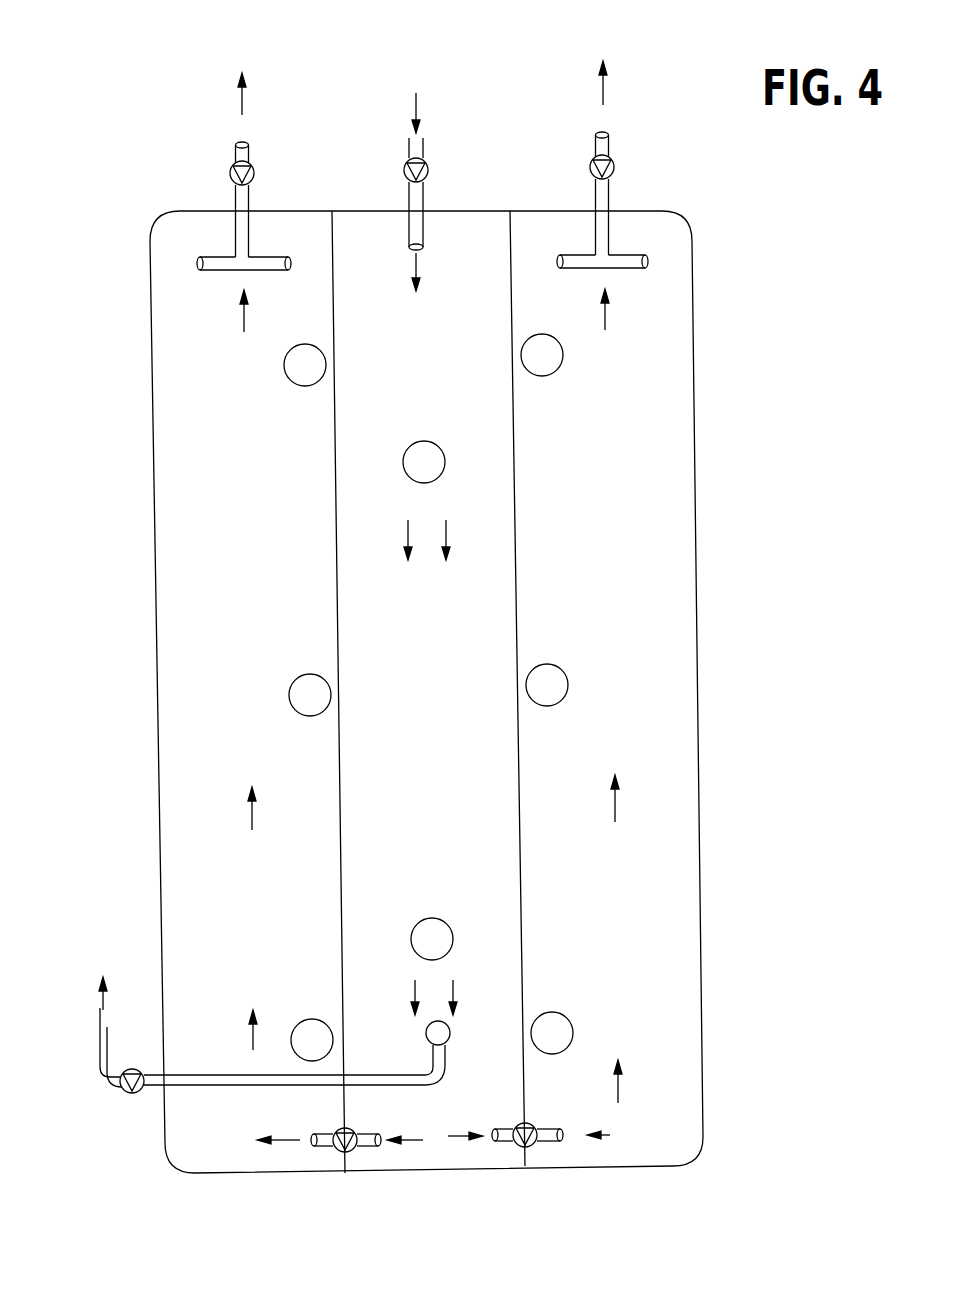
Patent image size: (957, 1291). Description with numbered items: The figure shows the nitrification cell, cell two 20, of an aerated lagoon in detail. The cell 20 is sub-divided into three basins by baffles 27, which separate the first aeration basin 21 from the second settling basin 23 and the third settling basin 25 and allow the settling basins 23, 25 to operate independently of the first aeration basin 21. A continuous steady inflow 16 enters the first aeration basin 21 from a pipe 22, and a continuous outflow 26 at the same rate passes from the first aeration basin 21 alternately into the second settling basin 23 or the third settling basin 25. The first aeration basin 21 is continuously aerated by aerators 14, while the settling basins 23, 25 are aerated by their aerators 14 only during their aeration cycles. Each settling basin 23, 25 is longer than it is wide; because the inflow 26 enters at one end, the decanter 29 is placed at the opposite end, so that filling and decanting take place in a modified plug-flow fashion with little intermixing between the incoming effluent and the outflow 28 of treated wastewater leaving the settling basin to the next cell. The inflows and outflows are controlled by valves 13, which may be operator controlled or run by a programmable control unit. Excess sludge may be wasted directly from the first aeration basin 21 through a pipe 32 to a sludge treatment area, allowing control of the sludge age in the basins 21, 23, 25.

The valve 13 is at (230, 162).
The aerator 14 is at (404, 456).
The inflow 16 is at (413, 243).
The cell 2 20 is at (154, 1176).
The first aeration basin 21 is at (455, 238).
The pipe 22 is at (424, 196).
The second settling basin 23 is at (208, 462).
The third settling basin 25 is at (632, 892).
The outflow 26 is at (277, 1150).
The baffle 27 is at (333, 527).
The outflow 28 is at (238, 100).
The decanter 29 is at (202, 255).
The pipe 32 is at (98, 1046).